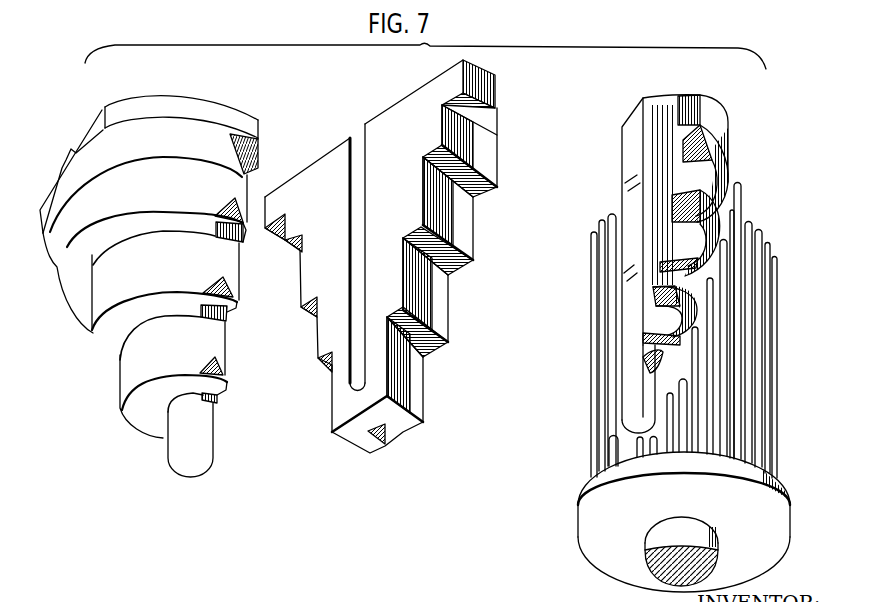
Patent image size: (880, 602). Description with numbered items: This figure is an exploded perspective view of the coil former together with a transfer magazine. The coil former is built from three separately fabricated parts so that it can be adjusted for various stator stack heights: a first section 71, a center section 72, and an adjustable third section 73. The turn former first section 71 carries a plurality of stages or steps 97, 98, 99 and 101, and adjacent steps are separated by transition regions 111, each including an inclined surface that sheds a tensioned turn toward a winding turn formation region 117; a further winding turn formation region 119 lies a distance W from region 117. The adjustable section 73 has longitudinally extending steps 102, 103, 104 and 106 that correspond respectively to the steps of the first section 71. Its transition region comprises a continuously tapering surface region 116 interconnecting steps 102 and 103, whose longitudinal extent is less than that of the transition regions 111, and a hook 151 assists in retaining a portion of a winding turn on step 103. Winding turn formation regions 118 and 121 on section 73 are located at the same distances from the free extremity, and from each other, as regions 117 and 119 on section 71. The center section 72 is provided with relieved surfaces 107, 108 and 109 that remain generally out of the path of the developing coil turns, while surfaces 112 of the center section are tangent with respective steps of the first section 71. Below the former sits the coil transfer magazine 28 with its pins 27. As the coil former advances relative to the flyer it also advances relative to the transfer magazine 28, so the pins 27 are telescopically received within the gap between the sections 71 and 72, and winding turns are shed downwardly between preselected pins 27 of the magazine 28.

The third section 73 is at (193, 98).
The step 106 is at (240, 192).
The step 104 is at (230, 265).
The winding turn formation region 121 is at (227, 323).
The step 103 is at (220, 340).
The hook 151 is at (222, 368).
The continuously tapering surface region 116 is at (208, 397).
The winding turn formation region 118 is at (212, 402).
The step 102 is at (207, 435).
The center section 72 is at (393, 103).
The relieved surface 107 is at (485, 150).
The relieved surface 108 is at (462, 225).
The tangent surfaces 112 is at (474, 243).
The relieved surface 109 is at (438, 303).
The transition region 111 is at (410, 383).
The first section 71 is at (682, 93).
The step 101 is at (704, 173).
The step 99 is at (690, 233).
The step 98 is at (670, 315).
The winding turn formation region 119 is at (657, 297).
The winding turn formation region 117 is at (650, 373).
The step 97 is at (643, 397).
The pins 27 is at (740, 197).
The coil transfer magazine 28 is at (600, 488).